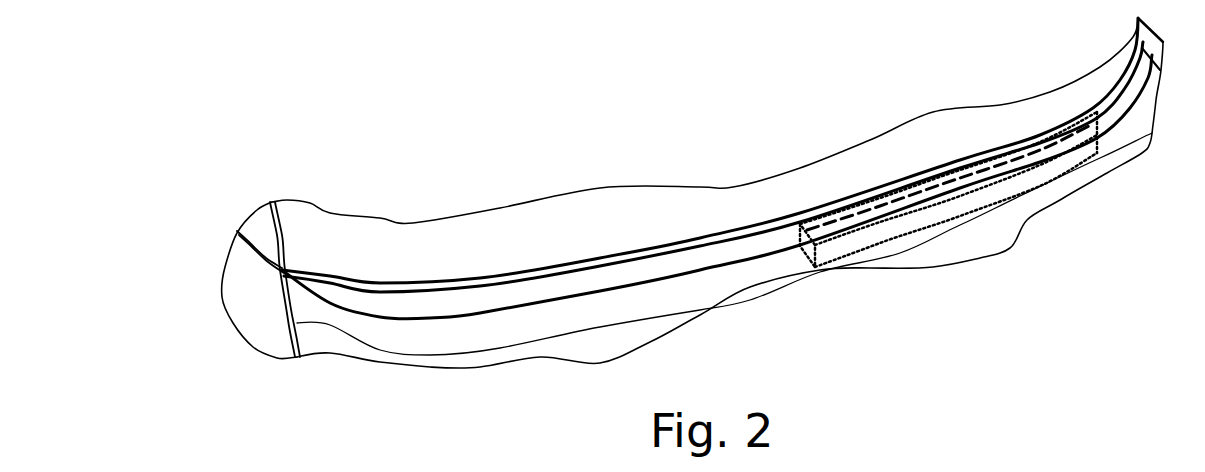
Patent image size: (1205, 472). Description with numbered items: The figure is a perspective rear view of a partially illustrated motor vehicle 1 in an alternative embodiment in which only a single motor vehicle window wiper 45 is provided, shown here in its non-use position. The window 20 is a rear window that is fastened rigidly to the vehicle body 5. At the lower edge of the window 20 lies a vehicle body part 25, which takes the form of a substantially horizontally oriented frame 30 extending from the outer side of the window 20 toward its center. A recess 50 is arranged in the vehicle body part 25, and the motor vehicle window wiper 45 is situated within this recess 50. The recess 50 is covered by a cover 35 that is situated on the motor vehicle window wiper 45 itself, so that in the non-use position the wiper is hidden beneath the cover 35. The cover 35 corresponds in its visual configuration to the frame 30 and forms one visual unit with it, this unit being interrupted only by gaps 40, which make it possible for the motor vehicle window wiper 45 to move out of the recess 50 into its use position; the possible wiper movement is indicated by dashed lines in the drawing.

The motor vehicle 1 is at (500, 170).
The vehicle body 5 is at (254, 285).
The window 20 is at (330, 247).
The vehicle body part 25 is at (750, 237).
The frame 30 is at (670, 270).
The cover 35 is at (944, 186).
The gaps 40 is at (806, 222).
The motor vehicle window wiper 45 is at (1035, 152).
The recess 50 is at (896, 235).